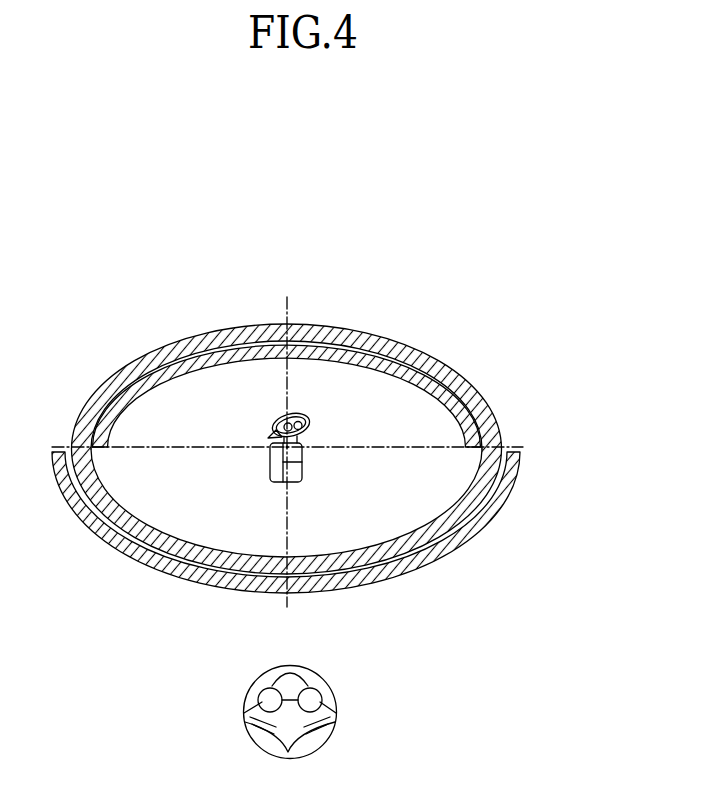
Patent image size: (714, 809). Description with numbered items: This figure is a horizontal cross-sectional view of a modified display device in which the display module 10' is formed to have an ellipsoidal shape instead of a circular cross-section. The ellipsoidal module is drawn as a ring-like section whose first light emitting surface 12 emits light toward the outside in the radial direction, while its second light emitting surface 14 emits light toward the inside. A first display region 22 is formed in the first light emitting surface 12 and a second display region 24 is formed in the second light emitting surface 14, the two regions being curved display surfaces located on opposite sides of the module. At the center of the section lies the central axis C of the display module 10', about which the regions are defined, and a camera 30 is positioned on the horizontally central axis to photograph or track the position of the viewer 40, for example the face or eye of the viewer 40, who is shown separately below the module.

The display module 10' is at (287, 351).
The first light emitting surface 12 is at (477, 393).
The second light emitting surface 14 is at (462, 508).
The first display region 22 is at (453, 548).
The second display region 24 is at (431, 384).
The camera 30 is at (295, 413).
The central axis C is at (283, 460).
The viewer 40 is at (337, 705).